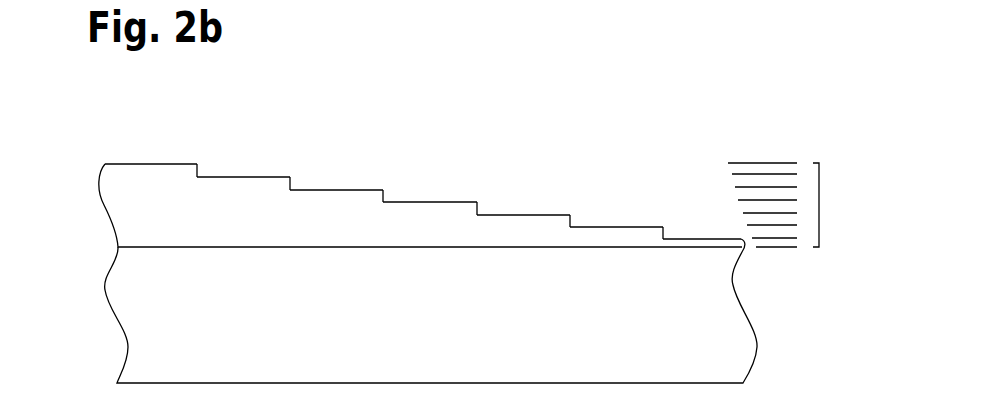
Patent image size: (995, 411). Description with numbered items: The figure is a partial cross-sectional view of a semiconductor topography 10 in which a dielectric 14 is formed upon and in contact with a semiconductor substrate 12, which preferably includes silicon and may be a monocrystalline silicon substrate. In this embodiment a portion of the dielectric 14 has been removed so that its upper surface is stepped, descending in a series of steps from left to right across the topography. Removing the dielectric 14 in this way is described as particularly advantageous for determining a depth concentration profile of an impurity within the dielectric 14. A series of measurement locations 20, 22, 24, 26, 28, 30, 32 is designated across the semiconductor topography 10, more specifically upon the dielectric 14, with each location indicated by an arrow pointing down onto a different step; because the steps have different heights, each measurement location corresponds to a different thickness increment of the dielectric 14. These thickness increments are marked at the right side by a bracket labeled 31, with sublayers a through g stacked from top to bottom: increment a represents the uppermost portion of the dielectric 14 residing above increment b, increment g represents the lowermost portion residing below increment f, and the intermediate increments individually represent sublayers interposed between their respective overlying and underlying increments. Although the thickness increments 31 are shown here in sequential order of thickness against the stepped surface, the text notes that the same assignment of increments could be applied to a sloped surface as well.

The semiconductor topography 10 is at (662, 88).
The semiconductor substrate 12 is at (659, 340).
The dielectric 14 is at (130, 217).
The measurement location 20 is at (147, 138).
The measurement location 22 is at (248, 153).
The measurement location 24 is at (333, 168).
The measurement location 26 is at (430, 178).
The measurement location 28 is at (523, 190).
The measurement location 30 is at (617, 202).
The thickness increments 31 is at (823, 200).
The measurement location 32 is at (693, 219).